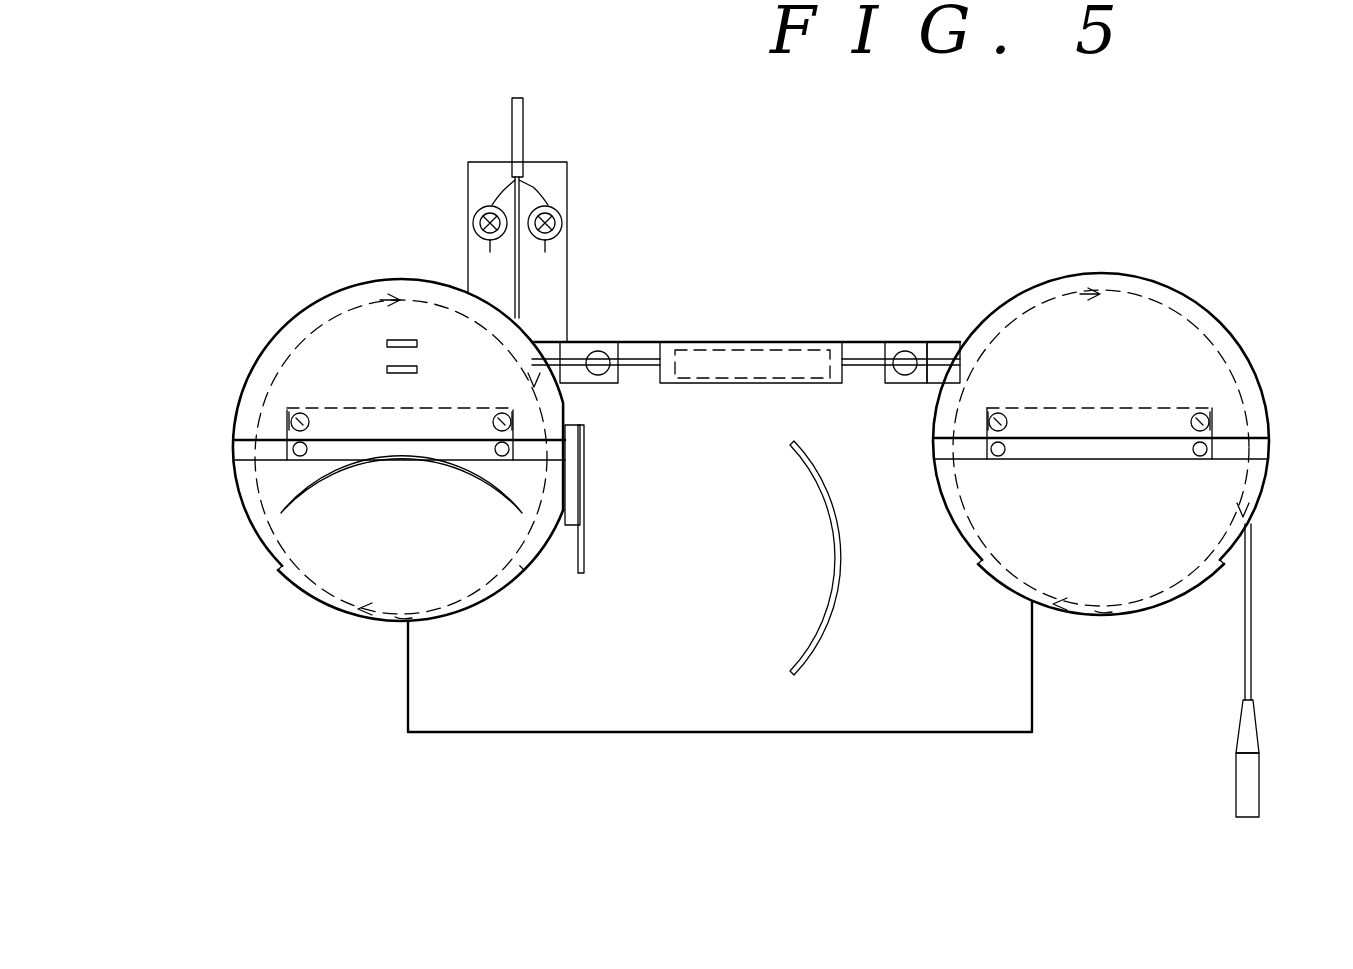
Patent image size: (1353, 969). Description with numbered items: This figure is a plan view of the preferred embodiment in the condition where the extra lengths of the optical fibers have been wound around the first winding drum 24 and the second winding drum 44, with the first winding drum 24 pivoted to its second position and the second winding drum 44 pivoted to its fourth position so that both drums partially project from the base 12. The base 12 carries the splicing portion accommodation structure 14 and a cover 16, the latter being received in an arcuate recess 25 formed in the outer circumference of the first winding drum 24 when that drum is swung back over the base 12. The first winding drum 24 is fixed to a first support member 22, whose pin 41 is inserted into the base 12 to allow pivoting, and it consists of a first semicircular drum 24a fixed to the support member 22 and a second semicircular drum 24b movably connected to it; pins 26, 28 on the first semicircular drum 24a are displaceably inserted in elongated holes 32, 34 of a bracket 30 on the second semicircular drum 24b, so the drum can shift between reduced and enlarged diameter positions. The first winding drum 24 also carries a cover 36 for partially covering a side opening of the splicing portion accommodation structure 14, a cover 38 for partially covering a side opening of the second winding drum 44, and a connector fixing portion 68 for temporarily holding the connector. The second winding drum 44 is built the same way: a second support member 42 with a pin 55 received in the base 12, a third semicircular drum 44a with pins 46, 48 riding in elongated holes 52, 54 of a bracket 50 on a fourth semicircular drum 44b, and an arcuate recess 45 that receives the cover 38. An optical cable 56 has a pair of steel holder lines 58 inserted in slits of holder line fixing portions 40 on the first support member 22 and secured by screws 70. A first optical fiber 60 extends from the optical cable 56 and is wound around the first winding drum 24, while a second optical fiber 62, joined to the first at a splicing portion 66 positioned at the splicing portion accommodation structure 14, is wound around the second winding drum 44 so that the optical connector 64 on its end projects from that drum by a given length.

The base 12 is at (716, 710).
The splicing portion accommodation structure 14 is at (722, 341).
The cover 16 is at (802, 660).
The first support member 22 is at (560, 250).
The first winding drum 24 is at (272, 332).
The first semicircular drum 24a is at (370, 283).
The second semicircular drum 24b is at (272, 575).
The arcuate recess 25 is at (357, 627).
The pin 26 is at (294, 411).
The pin 28 is at (500, 412).
The bracket 30 is at (428, 450).
The elongated hole 32 is at (287, 443).
The elongated hole 34 is at (500, 450).
The cover 36 is at (582, 578).
The cover 38 is at (326, 487).
The holder line fixing portions 40 is at (480, 205).
The pin 41 is at (598, 351).
The second support member 42 is at (942, 352).
The second winding drum 44 is at (1190, 293).
The third semicircular drum 44a is at (1087, 272).
The fourth semicircular drum 44b is at (1178, 563).
The arcuate recess 45 is at (1120, 615).
The pin 46 is at (998, 412).
The pin 48 is at (1200, 412).
The bracket 50 is at (1110, 445).
The elongated hole 52 is at (987, 445).
The elongated hole 54 is at (1212, 448).
The pin 55 is at (905, 350).
The optical cable 56 is at (523, 108).
The holder lines 58 is at (490, 193).
The first optical fiber 60 is at (520, 280).
The second optical fiber 62 is at (1252, 613).
The optical connector 64 is at (1238, 788).
The splicing portion 66 is at (768, 352).
The connector fixing portion 68 is at (385, 342).
The screws 70 is at (478, 223).